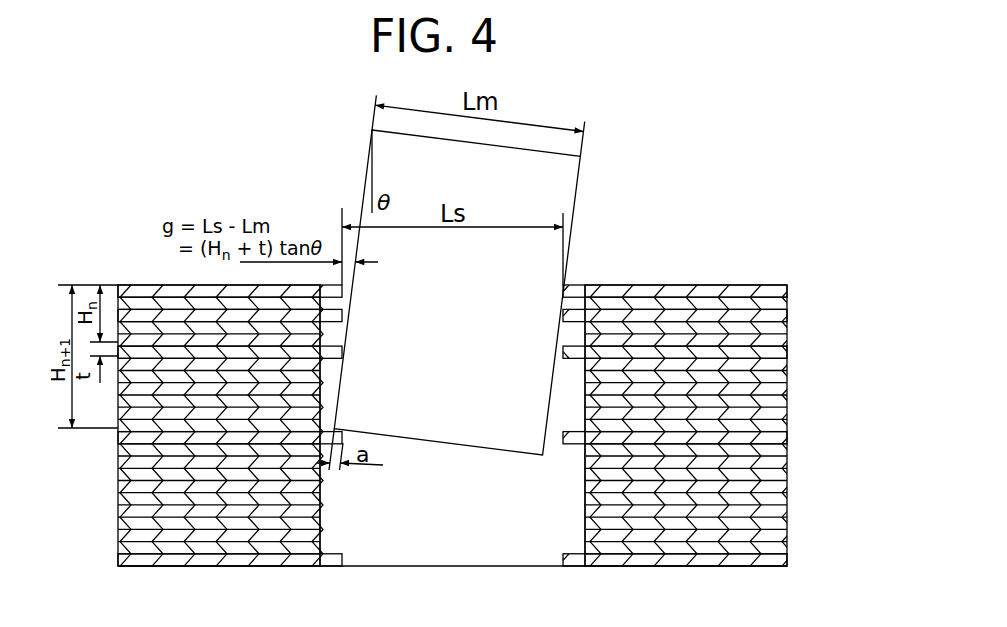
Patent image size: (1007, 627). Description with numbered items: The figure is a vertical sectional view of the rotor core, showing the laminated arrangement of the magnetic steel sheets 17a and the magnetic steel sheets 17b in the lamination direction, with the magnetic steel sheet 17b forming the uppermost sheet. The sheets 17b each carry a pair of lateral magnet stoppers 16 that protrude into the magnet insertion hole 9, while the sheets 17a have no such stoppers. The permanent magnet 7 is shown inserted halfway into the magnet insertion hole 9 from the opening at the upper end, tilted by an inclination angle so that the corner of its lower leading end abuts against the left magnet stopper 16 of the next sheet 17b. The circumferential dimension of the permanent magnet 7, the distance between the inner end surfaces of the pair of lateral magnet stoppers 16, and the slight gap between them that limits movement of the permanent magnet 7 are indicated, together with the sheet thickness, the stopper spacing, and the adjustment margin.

The permanent magnet 7 is at (563, 190).
The magnet insertion hole 9 is at (447, 566).
The lateral magnet stopper 16 is at (331, 289).
The magnetic steel sheet 17a is at (710, 308).
The magnetic steel sheet 17b is at (782, 297).